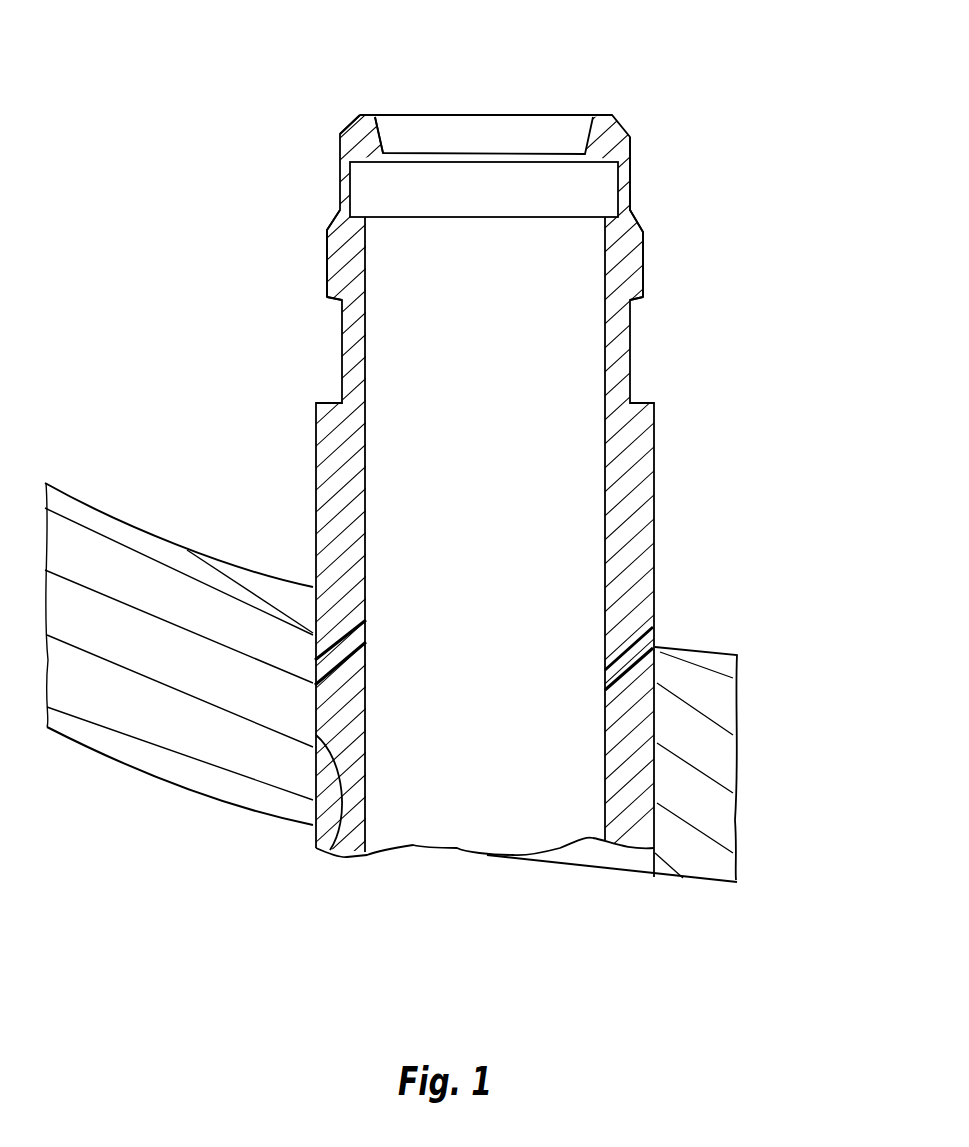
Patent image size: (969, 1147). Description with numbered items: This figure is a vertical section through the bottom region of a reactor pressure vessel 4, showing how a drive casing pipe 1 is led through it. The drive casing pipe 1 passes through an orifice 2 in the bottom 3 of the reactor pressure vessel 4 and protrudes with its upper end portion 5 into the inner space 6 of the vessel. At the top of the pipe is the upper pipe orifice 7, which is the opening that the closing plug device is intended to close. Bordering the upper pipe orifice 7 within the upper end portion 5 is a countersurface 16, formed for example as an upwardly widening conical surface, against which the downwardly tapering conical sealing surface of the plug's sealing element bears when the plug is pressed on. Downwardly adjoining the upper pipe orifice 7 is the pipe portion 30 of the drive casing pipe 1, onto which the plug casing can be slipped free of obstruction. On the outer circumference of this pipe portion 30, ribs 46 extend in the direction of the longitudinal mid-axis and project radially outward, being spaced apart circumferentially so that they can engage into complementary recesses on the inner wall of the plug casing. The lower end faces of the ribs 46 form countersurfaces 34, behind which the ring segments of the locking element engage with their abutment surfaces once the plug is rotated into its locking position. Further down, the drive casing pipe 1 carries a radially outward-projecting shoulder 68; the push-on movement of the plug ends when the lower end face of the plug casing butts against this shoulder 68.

The drive casing pipe 1 is at (456, 485).
The orifice 2 is at (327, 850).
The bottom 3 is at (245, 790).
The reactor pressure vessel 4 is at (163, 570).
The upper end portion 5 is at (637, 542).
The inner space 6 is at (228, 297).
The upper pipe orifice 7 is at (553, 135).
The countersurface 16 is at (377, 131).
The pipe portion 30 is at (707, 243).
The countersurfaces 34 is at (337, 300).
The ribs 46 is at (345, 258).
The shoulder 68 is at (342, 404).